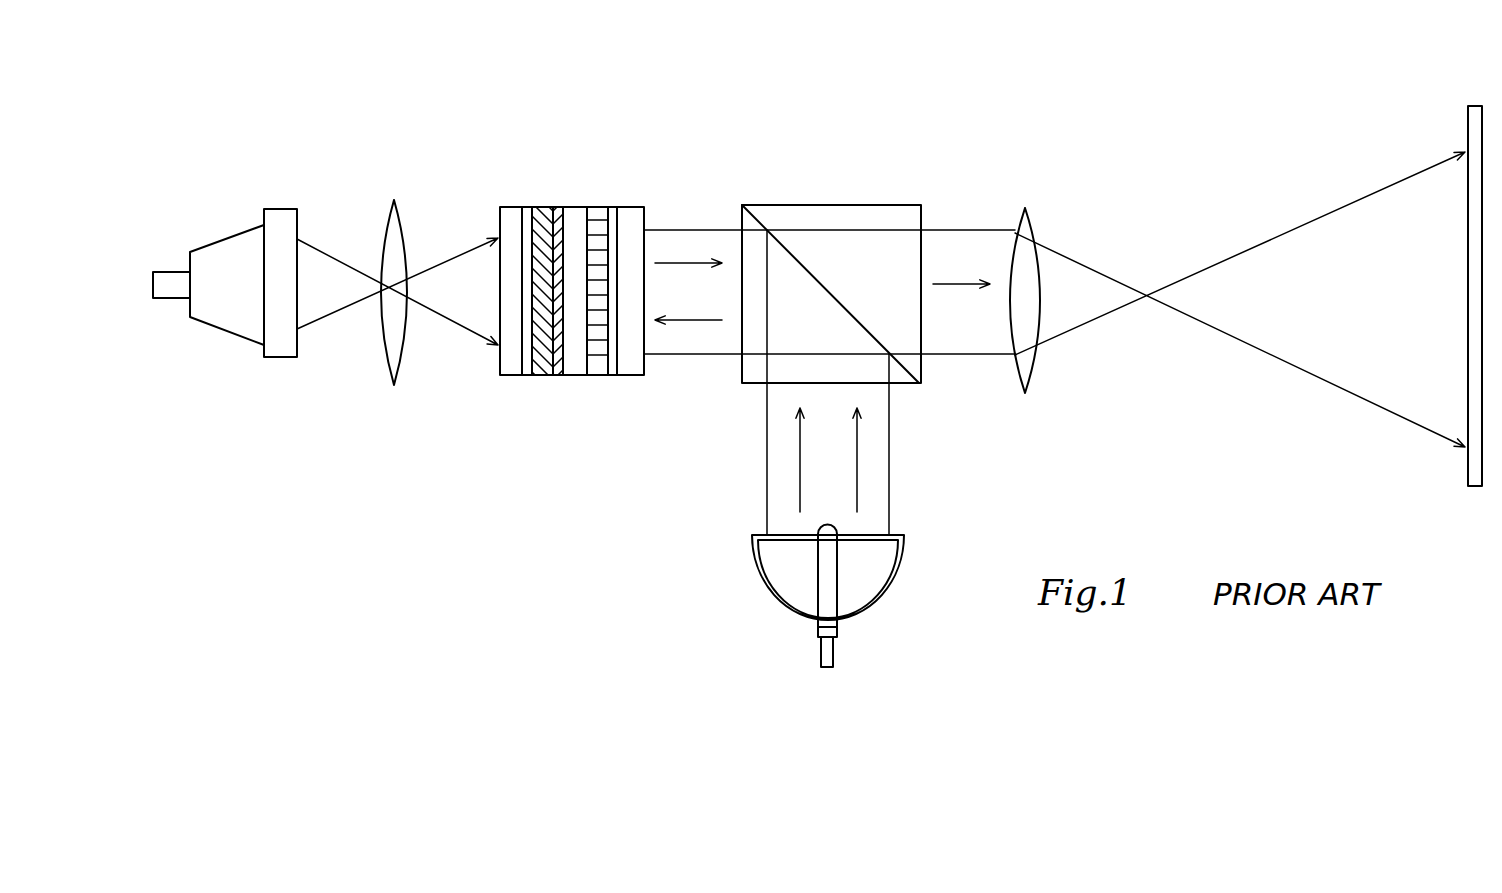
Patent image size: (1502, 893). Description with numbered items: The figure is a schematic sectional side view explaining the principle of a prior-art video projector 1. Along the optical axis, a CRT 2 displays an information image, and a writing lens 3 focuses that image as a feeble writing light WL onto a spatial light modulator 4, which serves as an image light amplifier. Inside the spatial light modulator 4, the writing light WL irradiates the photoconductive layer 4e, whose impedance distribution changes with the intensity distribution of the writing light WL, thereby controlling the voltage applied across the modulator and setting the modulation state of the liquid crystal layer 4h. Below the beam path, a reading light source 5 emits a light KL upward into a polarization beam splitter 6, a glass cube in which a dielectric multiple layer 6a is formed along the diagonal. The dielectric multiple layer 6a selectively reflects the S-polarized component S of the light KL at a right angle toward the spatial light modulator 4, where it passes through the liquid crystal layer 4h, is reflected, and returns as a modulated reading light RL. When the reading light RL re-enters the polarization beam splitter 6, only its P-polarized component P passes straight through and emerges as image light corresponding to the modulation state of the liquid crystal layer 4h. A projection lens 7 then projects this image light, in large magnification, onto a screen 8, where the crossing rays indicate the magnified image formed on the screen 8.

The projector 1 is at (292, 83).
The CRT 2 is at (240, 337).
The writing lens 3 is at (387, 357).
The spatial light modulator 4 is at (567, 305).
The photoconductive layer 4e is at (537, 377).
The liquid crystal layer 4h is at (598, 207).
The reading light source 5 is at (752, 562).
The polarization beam splitter 6 is at (804, 284).
The dielectric multiple layer 6a is at (805, 268).
The projection lens 7 is at (1020, 387).
The screen 8 is at (1465, 472).
The writing light WL is at (447, 322).
The reading light RL is at (693, 260).
The S-polarized component light S is at (829, 321).
The P-polarized component P is at (961, 270).
The light from the reading light source KL is at (857, 458).